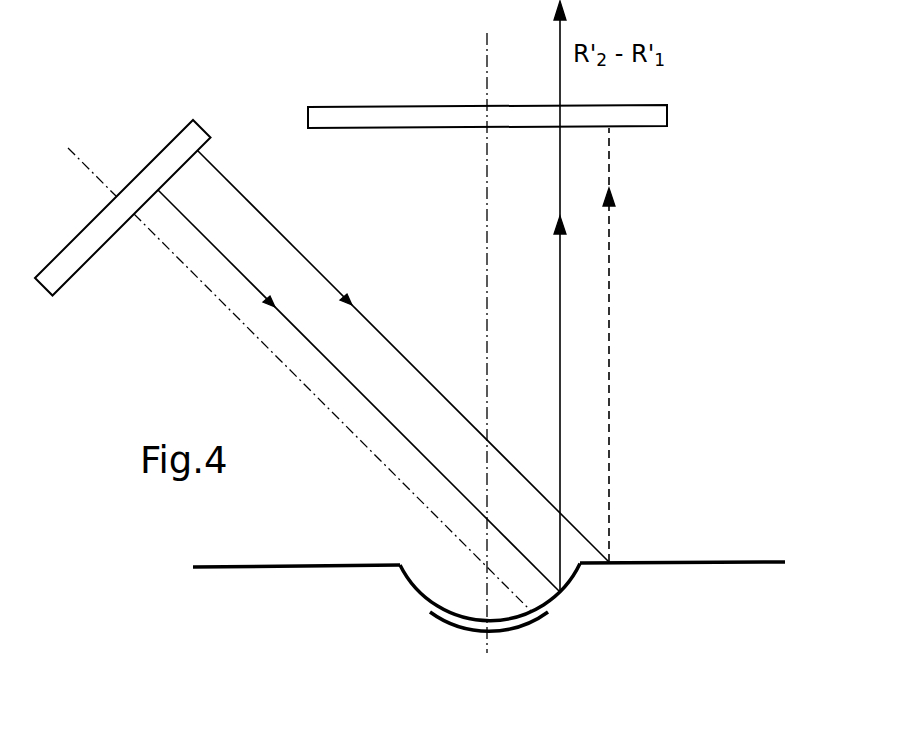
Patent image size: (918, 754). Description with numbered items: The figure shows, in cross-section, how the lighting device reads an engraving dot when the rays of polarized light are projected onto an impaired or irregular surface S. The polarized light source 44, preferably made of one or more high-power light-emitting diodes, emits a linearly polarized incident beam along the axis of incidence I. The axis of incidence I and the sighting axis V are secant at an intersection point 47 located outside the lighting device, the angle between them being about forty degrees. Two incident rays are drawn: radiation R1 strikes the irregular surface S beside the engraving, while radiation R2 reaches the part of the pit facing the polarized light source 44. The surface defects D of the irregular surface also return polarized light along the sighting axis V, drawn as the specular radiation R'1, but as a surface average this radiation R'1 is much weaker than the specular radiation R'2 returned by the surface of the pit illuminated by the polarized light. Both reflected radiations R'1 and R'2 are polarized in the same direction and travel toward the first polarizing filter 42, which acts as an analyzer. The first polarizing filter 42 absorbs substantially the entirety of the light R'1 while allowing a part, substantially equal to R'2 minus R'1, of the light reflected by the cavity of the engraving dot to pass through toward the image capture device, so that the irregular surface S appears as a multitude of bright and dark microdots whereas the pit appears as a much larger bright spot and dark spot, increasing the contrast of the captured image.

The first polarizing filter 42 is at (658, 117).
The polarized light source 44 is at (50, 282).
The intersection point 47 is at (490, 566).
The surface defects D is at (665, 561).
The surface S is at (770, 561).
The axis of incidence I is at (288, 366).
The sighting axis V is at (471, 338).
The radiation R1 is at (404, 355).
The radiation R2 is at (359, 388).
The radiation R'1 is at (629, 345).
The radiation R'2 is at (540, 296).